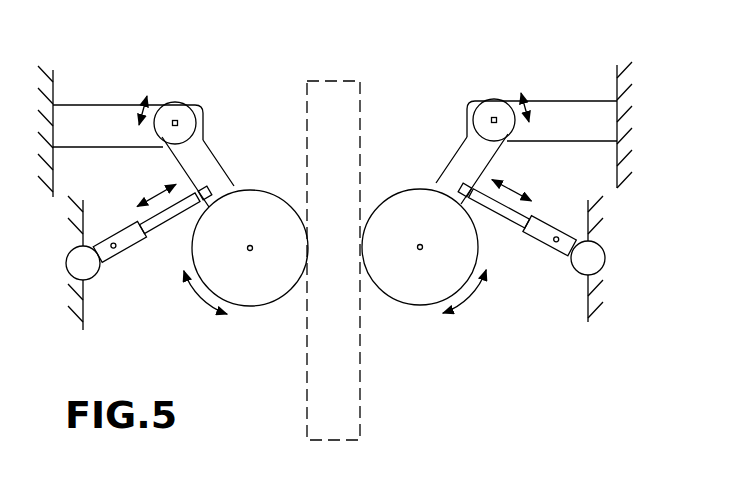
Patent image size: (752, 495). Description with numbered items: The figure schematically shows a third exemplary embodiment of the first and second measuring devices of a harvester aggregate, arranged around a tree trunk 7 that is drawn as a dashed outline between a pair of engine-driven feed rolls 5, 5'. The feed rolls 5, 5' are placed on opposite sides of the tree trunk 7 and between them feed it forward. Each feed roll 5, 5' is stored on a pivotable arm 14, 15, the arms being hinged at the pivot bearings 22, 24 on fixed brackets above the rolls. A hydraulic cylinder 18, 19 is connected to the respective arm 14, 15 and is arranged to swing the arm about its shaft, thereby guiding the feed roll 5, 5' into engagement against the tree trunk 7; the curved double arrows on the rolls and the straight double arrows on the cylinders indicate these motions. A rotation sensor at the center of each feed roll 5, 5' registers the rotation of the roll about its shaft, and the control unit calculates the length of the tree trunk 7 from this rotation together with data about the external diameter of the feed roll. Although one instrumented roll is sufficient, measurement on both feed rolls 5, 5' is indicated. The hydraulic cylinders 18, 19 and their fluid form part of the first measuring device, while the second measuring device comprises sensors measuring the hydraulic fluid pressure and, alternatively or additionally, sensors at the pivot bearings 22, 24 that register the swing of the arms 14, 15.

The feed roll 5 is at (246, 276).
The feed roll 5' is at (424, 272).
The tree trunk 7 is at (337, 410).
The pivotable arm 14 is at (205, 162).
The pivotable arm 15 is at (463, 155).
The hydraulic cylinder 18 is at (133, 247).
The hydraulic cylinder 19 is at (529, 236).
The pivot bearing 22 is at (182, 117).
The pivot bearing 24 is at (489, 113).